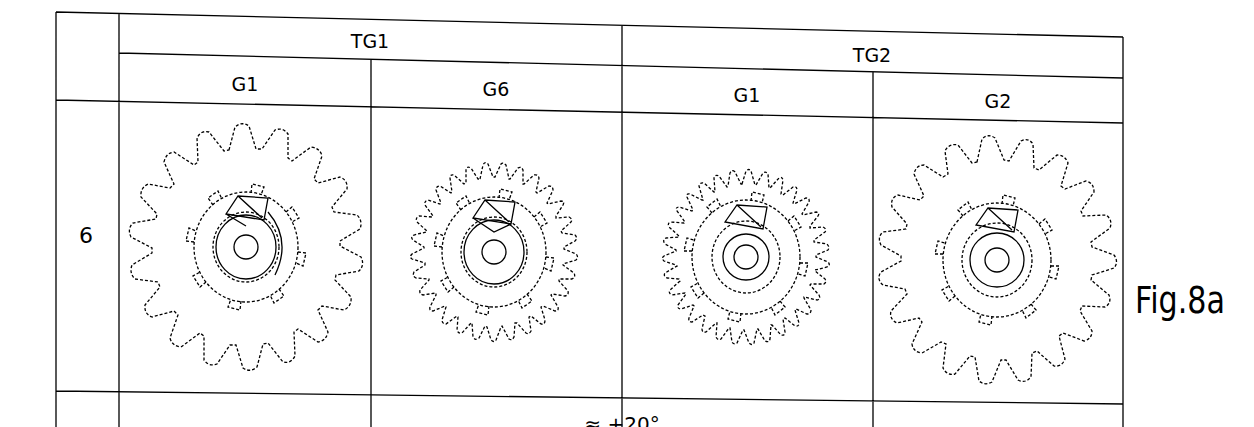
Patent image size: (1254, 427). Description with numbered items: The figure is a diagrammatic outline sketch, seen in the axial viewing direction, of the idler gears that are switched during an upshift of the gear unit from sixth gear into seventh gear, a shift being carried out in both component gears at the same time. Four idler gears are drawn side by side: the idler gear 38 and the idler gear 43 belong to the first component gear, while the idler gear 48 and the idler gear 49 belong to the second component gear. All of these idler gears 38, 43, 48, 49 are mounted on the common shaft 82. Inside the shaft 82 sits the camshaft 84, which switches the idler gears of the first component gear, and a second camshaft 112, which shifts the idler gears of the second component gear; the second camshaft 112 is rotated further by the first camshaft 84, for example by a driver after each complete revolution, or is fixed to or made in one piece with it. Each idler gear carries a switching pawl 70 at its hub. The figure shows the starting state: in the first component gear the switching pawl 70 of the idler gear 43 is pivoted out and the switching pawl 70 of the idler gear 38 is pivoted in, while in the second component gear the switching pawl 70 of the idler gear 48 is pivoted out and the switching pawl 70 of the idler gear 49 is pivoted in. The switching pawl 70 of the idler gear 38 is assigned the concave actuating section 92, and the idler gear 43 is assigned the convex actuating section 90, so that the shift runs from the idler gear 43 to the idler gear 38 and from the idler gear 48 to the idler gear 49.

The idler gear 38 is at (277, 175).
The idler gear 43 is at (529, 205).
The idler gear 48 is at (785, 205).
The idler gear 49 is at (1031, 195).
The switching pawl 70 is at (248, 202).
The shaft 82 is at (263, 288).
The camshaft 84 is at (220, 252).
The convex actuating section 90 is at (495, 212).
The concave actuating section 92 is at (265, 235).
The second camshaft 112 is at (733, 268).